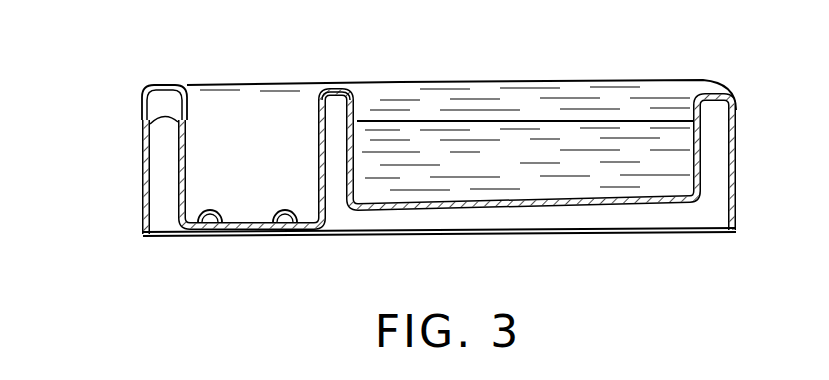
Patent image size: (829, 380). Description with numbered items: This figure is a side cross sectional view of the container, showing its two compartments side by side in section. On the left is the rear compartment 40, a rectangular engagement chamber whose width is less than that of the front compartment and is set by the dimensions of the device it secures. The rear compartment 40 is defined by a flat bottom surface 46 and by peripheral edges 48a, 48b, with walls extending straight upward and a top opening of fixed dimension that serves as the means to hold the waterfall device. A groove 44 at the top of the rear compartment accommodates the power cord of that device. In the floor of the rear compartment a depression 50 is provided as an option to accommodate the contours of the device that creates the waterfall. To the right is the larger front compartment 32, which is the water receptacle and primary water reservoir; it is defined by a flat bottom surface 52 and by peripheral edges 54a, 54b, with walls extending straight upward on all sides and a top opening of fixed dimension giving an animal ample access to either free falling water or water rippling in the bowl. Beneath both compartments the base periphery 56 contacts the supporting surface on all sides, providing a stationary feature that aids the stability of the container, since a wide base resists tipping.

The front compartment 32 is at (468, 180).
The rear compartment 40 is at (234, 161).
The groove 44 is at (165, 118).
The flat bottom surface 46 is at (222, 232).
The peripheral edge 48a is at (190, 140).
The peripheral edge 48b is at (318, 118).
The depression 50 is at (293, 232).
The flat bottom surface 52 is at (543, 190).
The peripheral edge 54a is at (358, 106).
The peripheral edge 54b is at (697, 105).
The base periphery 56 is at (658, 232).